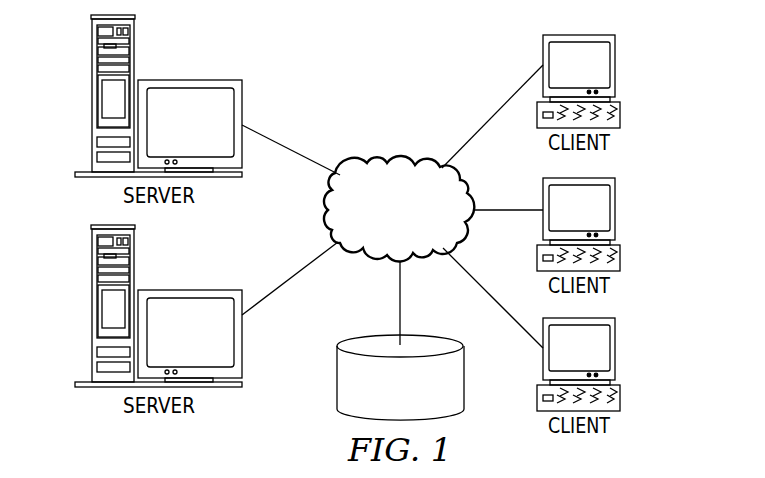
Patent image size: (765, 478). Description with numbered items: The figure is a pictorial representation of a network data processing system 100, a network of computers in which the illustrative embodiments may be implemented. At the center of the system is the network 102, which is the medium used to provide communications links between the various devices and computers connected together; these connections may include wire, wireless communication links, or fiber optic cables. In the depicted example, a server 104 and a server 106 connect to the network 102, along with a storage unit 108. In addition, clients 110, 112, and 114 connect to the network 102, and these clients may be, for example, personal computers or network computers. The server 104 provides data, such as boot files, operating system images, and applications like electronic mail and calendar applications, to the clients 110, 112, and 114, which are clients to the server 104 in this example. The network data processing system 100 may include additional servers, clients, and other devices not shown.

The network data processing system 100 is at (452, 56).
The network 102 is at (365, 152).
The server 104 is at (93, 97).
The server 106 is at (93, 307).
The storage unit 108 is at (337, 388).
The client 110 is at (615, 67).
The client 112 is at (615, 210).
The client 114 is at (615, 350).